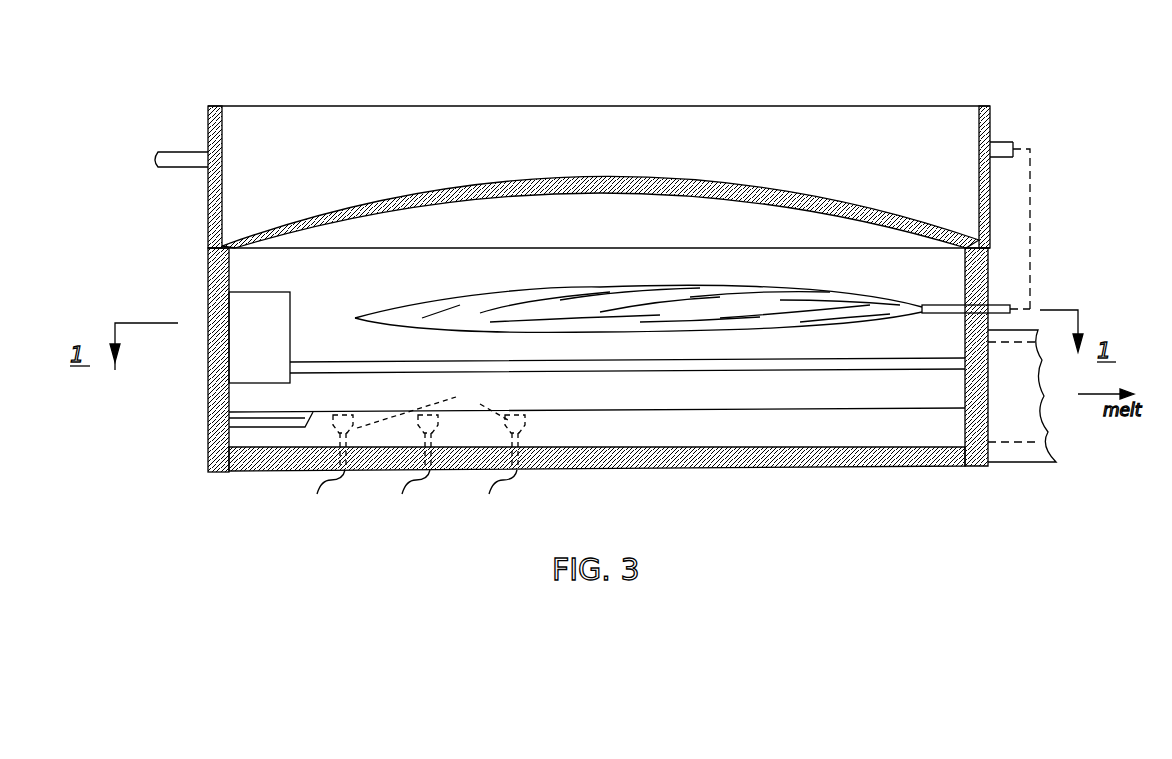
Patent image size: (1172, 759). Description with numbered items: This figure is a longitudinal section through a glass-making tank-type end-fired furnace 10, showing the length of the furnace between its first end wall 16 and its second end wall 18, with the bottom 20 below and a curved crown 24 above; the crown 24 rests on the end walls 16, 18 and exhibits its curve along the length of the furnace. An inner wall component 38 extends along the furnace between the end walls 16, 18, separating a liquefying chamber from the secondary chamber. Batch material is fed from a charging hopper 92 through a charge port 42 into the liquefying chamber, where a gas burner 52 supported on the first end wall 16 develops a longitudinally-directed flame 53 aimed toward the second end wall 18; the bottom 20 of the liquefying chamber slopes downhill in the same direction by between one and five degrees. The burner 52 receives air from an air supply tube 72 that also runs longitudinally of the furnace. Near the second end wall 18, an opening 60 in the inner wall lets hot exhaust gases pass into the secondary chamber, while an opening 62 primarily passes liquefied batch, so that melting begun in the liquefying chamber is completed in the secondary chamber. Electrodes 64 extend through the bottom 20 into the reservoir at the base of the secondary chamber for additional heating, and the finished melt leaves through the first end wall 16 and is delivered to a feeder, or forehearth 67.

The glass-making tank-type end-fired furnace 10 is at (515, 497).
The first end wall 16 is at (984, 380).
The second end wall 18 is at (208, 402).
The bottom 20 is at (725, 472).
The curved crown 24 is at (444, 188).
The inner wall component 38 is at (670, 258).
The charge port 42 is at (668, 366).
The gas burner 52 is at (941, 302).
The flame 53 is at (490, 306).
The opening 60 is at (277, 322).
The opening 62 is at (310, 412).
The electrodes 64 is at (458, 398).
The forehearth 67 is at (1037, 430).
The air supply tube 72 is at (177, 152).
The charging hopper 92 is at (722, 124).